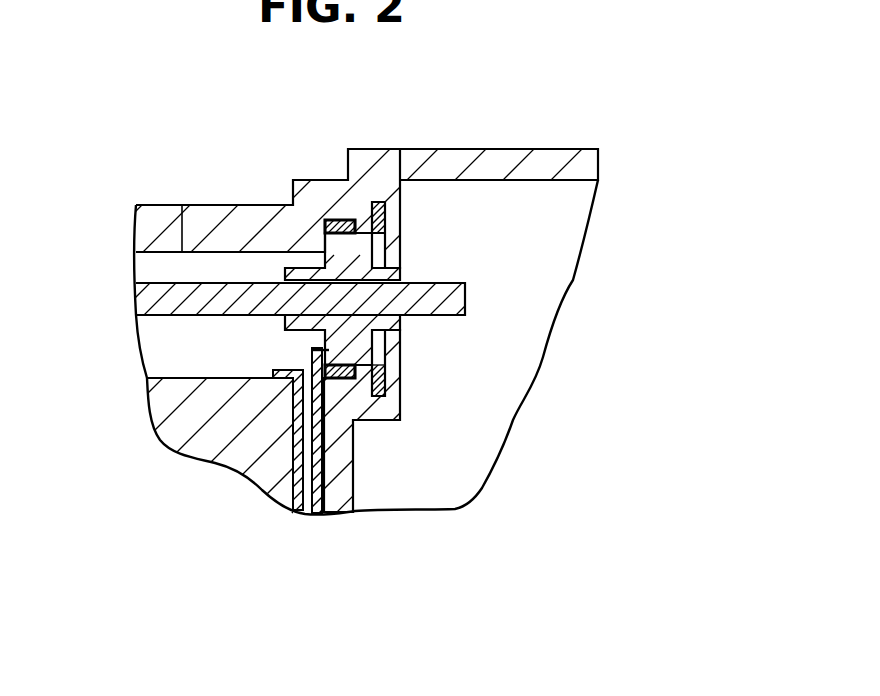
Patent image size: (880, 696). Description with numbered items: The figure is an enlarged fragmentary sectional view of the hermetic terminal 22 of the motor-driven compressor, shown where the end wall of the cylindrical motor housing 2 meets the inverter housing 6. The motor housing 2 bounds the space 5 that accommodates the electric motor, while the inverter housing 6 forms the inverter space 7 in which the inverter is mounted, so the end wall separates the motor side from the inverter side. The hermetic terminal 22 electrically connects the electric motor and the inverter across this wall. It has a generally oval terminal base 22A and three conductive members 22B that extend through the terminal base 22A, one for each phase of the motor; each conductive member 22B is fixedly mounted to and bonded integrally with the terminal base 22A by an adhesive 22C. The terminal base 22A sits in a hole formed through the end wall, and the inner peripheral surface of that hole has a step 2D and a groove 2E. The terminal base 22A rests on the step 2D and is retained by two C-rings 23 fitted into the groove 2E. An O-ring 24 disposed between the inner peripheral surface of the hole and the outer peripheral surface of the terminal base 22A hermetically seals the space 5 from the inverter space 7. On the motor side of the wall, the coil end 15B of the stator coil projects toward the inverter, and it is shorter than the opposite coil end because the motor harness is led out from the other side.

The motor housing 2 is at (233, 205).
The step 2D is at (343, 220).
The groove 2E is at (388, 210).
The space 5 is at (240, 358).
The inverter housing 6 is at (510, 149).
The inverter space 7 is at (435, 472).
The coil end 15B is at (227, 468).
The hermetic terminal 22 is at (201, 283).
The terminal base 22A is at (318, 268).
The conductive member 22B is at (190, 316).
The adhesive 22C is at (433, 313).
The C-ring 23 is at (390, 257).
The O-ring 24 is at (342, 383).